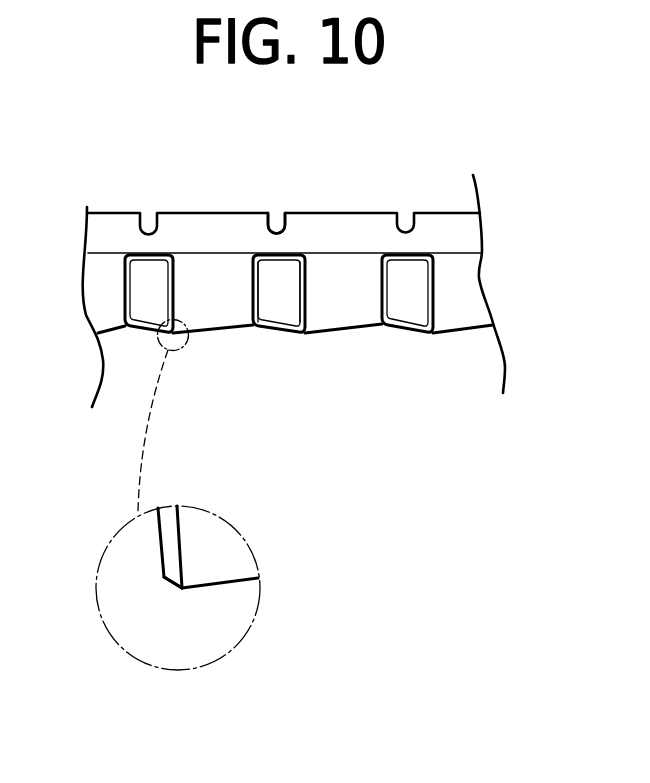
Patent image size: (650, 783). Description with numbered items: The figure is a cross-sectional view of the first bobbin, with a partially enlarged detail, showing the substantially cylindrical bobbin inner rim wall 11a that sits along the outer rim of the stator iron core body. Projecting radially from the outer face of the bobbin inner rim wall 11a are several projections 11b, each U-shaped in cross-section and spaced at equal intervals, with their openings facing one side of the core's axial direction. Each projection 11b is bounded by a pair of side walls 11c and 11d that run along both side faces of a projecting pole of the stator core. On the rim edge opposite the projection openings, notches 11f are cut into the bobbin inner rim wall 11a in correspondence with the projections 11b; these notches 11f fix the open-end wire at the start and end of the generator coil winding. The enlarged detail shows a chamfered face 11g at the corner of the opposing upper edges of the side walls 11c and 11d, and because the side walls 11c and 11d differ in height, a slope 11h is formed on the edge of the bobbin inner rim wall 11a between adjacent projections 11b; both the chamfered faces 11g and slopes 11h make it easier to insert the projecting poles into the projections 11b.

The bobbin inner rim wall 11a is at (360, 213).
The projection 11b is at (252, 276).
The side wall 11c is at (303, 293).
The side wall 11d is at (253, 288).
The notch 11f is at (277, 213).
The chamfered face 11g is at (165, 582).
The slope 11h is at (203, 333).